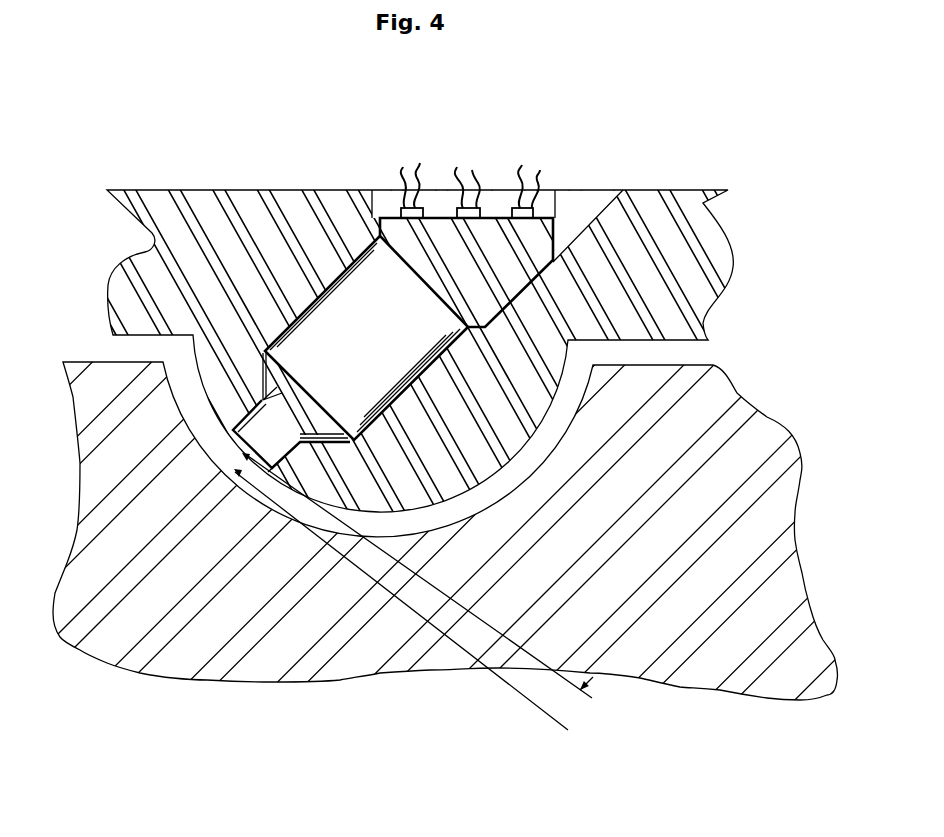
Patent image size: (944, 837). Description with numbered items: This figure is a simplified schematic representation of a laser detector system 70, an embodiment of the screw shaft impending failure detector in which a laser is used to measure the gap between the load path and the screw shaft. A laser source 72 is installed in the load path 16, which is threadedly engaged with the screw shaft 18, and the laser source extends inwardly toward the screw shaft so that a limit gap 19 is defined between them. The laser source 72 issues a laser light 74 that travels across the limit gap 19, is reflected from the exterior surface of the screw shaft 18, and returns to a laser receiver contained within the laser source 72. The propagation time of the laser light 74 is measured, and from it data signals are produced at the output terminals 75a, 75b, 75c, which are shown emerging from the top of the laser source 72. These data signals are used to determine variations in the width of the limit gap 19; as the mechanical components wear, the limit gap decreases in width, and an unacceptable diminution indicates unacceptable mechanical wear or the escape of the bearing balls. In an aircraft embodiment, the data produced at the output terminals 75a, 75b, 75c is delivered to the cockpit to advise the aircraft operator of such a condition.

The load path 16 is at (167, 213).
The screw shaft 18 is at (100, 377).
The limit gap 19 is at (553, 719).
The laser detector system 70 is at (875, 697).
The laser source 72 is at (380, 320).
The laser light 74 is at (240, 472).
The output terminal 75a is at (402, 168).
The output terminal 75b is at (457, 168).
The output terminal 75c is at (525, 165).